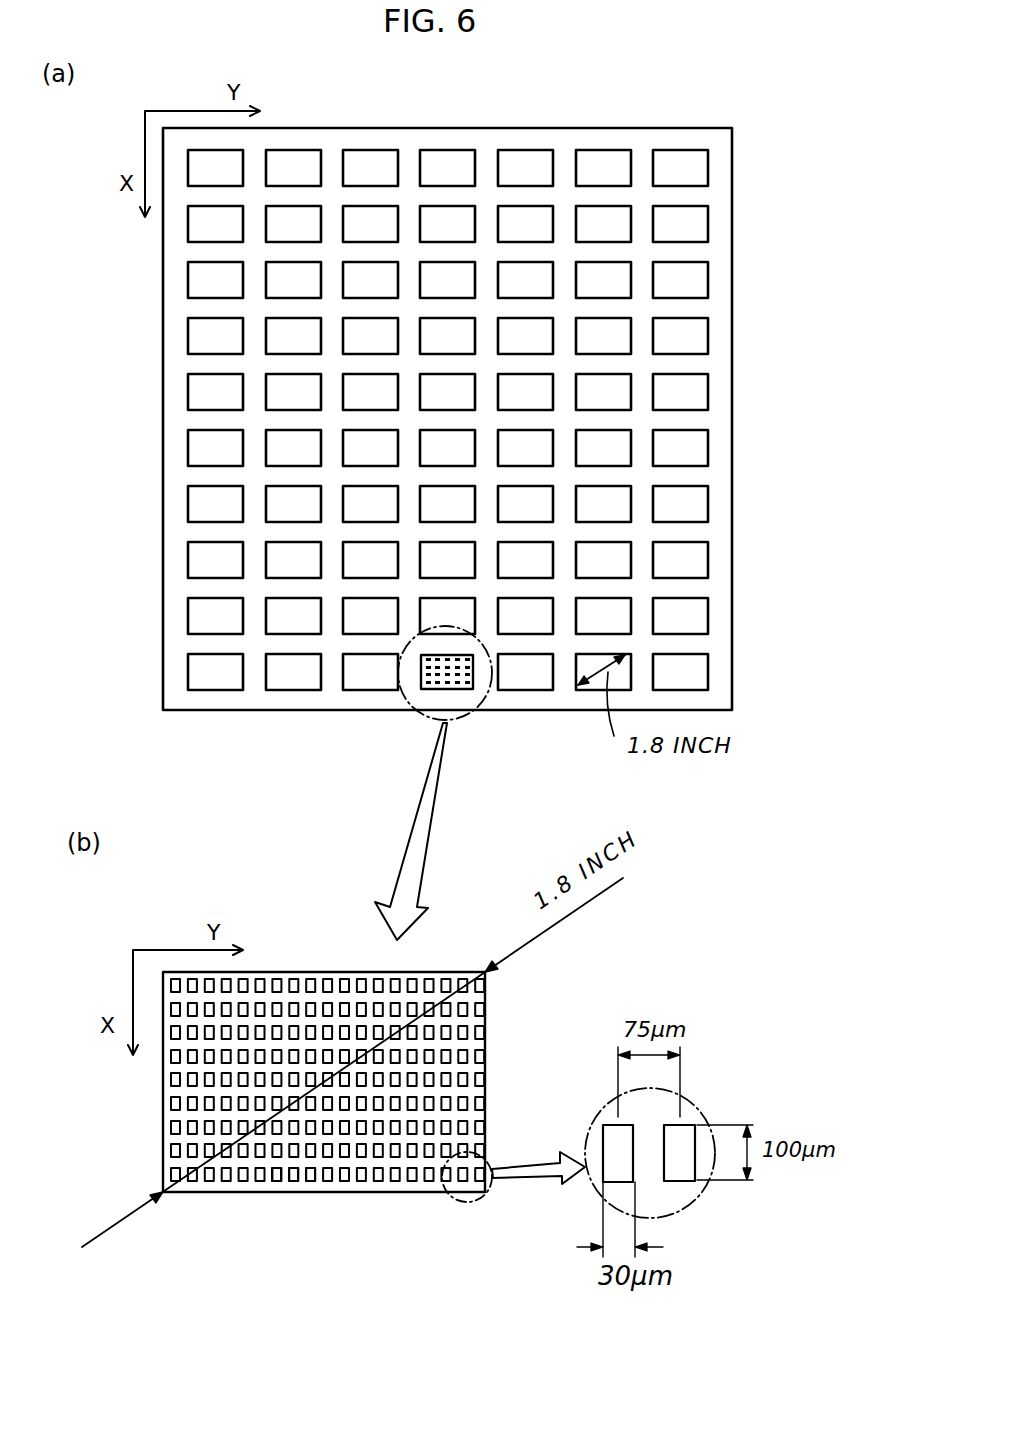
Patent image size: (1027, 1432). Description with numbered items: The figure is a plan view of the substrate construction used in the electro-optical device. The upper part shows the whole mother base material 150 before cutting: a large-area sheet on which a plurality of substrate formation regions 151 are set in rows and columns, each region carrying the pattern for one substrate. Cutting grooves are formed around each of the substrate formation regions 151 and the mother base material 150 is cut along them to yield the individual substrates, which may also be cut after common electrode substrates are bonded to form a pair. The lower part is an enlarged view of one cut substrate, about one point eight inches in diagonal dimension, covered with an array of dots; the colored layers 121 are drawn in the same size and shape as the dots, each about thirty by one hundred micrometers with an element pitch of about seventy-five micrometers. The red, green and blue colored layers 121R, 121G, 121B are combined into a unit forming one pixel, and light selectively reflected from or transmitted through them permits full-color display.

The mother base material 150 is at (718, 365).
The substrate formation regions 151 is at (673, 160).
The colored layer 121 is at (477, 1092).
The red colored layer 121R is at (270, 1187).
The green colored layer 121G is at (290, 1178).
The blue colored layer 121B is at (310, 1182).